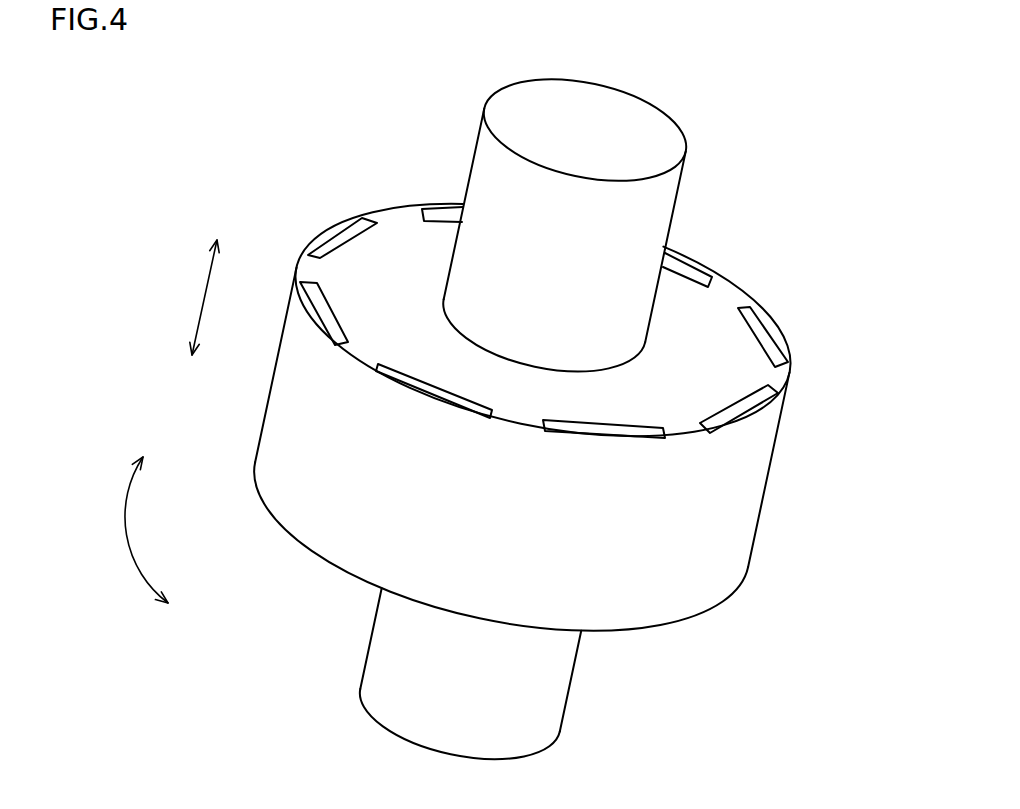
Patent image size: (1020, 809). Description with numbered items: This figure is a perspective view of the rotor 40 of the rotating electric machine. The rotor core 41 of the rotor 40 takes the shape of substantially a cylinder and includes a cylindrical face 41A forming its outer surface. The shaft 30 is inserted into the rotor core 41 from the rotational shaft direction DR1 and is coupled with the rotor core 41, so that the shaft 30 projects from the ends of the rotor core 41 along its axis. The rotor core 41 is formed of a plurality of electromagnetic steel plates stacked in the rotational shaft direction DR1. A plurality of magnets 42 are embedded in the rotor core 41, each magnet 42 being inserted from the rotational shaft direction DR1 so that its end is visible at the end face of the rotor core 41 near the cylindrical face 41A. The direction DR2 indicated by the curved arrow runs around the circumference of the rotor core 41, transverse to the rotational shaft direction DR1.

The shaft 30 is at (630, 113).
The rotor 40 is at (778, 242).
The rotor core 41 is at (750, 470).
The cylindrical face 41A is at (740, 504).
The magnet 42 is at (342, 240).
The rotational shaft direction DR1 is at (205, 294).
The circumferential direction DR2 is at (125, 523).